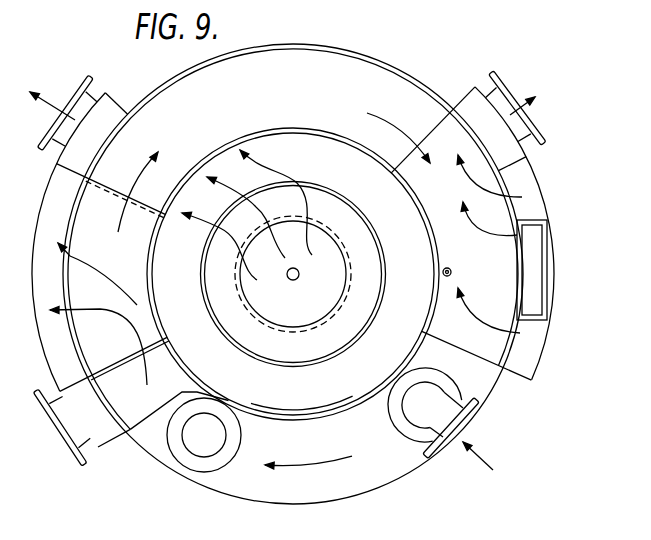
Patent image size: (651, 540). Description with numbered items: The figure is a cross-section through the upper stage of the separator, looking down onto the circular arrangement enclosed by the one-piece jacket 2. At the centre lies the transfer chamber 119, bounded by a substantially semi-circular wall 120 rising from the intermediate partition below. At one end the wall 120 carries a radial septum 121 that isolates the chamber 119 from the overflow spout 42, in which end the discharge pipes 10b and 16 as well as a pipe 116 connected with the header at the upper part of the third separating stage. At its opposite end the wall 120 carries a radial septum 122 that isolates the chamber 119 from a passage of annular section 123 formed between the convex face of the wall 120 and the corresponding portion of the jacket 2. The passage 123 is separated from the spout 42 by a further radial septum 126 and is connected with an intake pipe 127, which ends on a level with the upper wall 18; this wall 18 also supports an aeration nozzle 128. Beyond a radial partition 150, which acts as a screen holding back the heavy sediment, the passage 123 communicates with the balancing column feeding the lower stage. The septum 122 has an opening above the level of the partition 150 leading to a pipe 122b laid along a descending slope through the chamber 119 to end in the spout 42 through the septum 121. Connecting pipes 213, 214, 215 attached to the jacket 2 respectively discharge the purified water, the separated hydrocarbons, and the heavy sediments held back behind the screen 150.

The jacket 2 is at (346, 503).
The pipe 10b is at (528, 370).
The pipe 16 is at (533, 268).
The upper wall 18 is at (252, 487).
The overflow spout 42 is at (502, 217).
The pipe 116 is at (436, 287).
The transfer chamber 119 is at (340, 180).
The wall 120 is at (295, 396).
The radial septum 121 is at (393, 132).
The radial septum 122 is at (155, 208).
The pipe 122b is at (353, 72).
The passage of annular section 123 is at (338, 412).
The radial septum 126 is at (470, 352).
The intake pipe 127 is at (442, 412).
The aeration nozzle 128 is at (198, 453).
The radial partition 150 is at (165, 330).
The connecting pipe 213 is at (70, 117).
The connecting pipe 214 is at (507, 97).
The connecting pipe 215 is at (86, 441).